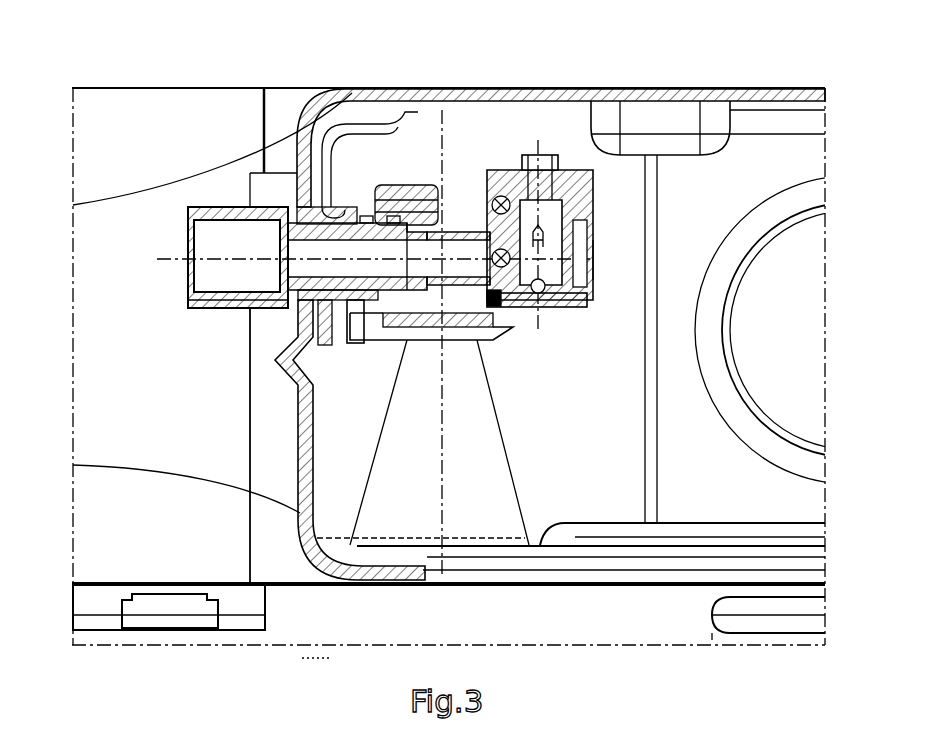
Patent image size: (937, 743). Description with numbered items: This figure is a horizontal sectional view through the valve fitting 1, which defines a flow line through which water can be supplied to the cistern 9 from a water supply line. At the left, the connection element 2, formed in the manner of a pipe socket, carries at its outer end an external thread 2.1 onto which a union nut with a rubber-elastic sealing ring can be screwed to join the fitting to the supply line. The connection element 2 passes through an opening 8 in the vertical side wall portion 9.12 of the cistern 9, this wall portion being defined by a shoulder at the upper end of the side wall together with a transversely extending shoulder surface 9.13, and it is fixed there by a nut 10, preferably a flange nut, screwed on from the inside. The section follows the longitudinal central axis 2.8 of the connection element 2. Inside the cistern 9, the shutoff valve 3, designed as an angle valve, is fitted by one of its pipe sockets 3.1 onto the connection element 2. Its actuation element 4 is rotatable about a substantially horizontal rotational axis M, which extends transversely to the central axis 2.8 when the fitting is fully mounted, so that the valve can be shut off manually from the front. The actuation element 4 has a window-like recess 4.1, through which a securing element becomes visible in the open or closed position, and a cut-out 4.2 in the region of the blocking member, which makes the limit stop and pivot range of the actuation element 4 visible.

The valve fitting 1 is at (430, 170).
The connection element 2 is at (273, 300).
The external thread 2.1 is at (207, 310).
The longitudinal central axis 2.8 is at (217, 250).
The shutoff valve 3 is at (500, 177).
The pipe socket 3.1 is at (453, 223).
The actuation element 4 is at (403, 332).
The window-like recess 4.1 is at (373, 327).
The cut-out 4.2 is at (518, 327).
The opening 8 is at (295, 200).
The cistern 9 is at (140, 115).
The vertical side wall portion 9.12 is at (300, 455).
The shoulder surface 9.13 is at (215, 457).
The nut 10 is at (332, 205).
The rotational axis M is at (590, 258).